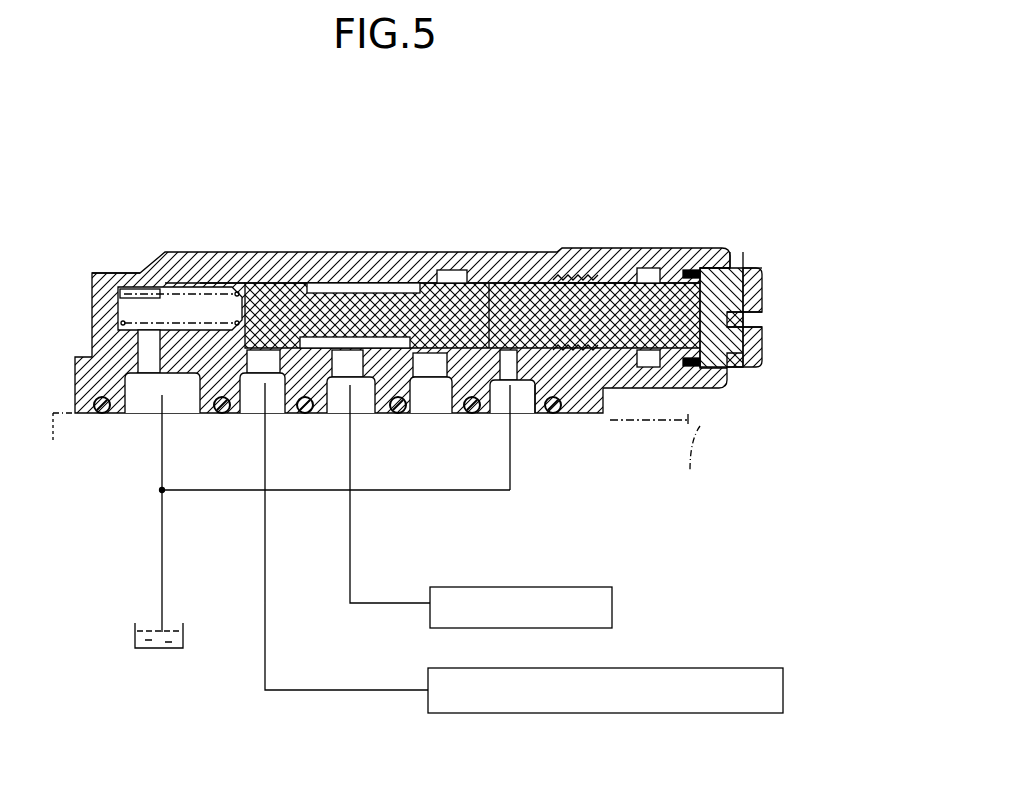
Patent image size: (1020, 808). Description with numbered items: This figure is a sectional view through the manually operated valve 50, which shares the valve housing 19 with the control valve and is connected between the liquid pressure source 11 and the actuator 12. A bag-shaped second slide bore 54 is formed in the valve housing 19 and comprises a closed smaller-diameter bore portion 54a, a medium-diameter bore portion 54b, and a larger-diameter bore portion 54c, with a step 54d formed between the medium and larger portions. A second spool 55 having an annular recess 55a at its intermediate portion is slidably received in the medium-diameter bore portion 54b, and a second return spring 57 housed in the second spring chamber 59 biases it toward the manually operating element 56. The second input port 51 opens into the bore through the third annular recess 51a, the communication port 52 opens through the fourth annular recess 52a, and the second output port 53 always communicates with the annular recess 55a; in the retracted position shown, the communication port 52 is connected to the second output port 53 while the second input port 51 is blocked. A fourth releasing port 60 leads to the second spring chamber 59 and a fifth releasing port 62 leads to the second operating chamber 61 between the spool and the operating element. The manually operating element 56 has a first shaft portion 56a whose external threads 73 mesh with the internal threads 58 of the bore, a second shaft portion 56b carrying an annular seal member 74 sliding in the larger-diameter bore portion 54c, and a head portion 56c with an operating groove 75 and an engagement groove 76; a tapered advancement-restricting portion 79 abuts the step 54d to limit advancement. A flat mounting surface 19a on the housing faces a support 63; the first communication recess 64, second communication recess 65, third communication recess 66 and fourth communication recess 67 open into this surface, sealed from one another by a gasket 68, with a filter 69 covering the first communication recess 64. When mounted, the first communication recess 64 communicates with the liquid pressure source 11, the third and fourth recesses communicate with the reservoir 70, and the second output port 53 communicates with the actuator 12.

The liquid pressure source 11 is at (718, 680).
The actuator 12 is at (580, 590).
The valve housing 19 is at (461, 278).
The mounting surface 19a is at (592, 414).
The manually operated valve 50 is at (352, 248).
The second input port 51 is at (253, 398).
The third annular recess 51a is at (232, 278).
The communication port 52 is at (430, 372).
The fourth annular recess 52a is at (419, 278).
The second output port 53 is at (347, 358).
The second slide bore 54 is at (516, 290).
The smaller-diameter bore portion 54a is at (120, 303).
The medium-diameter bore portion 54b is at (326, 278).
The larger-diameter bore portion 54c is at (673, 370).
The step 54d is at (672, 362).
The second spool 55 is at (295, 278).
The annular recess 55a is at (390, 278).
The manually operating element 56 is at (772, 359).
The first shaft portion 56a is at (527, 348).
The second shaft portion 56b is at (720, 268).
The head portion 56c is at (756, 268).
The second return spring 57 is at (122, 273).
The internal threads 58 is at (560, 278).
The second spring chamber 59 is at (165, 290).
The fourth releasing port 60 is at (148, 360).
The second operating chamber 61 is at (489, 283).
The fifth releasing port 62 is at (513, 390).
The support 63 is at (700, 428).
The first communication recess 64 is at (286, 392).
The second communication recess 65 is at (410, 398).
The third communication recess 66 is at (124, 398).
The fourth communication recess 67 is at (536, 397).
The gasket 68 is at (105, 417).
The filter 69 is at (253, 368).
The reservoir 70 is at (135, 631).
The external threads 73 is at (607, 278).
The annular seal member 74 is at (705, 268).
The operating groove 75 is at (764, 318).
The engagement groove 76 is at (737, 268).
The advancement-restricting portion 79 is at (633, 278).